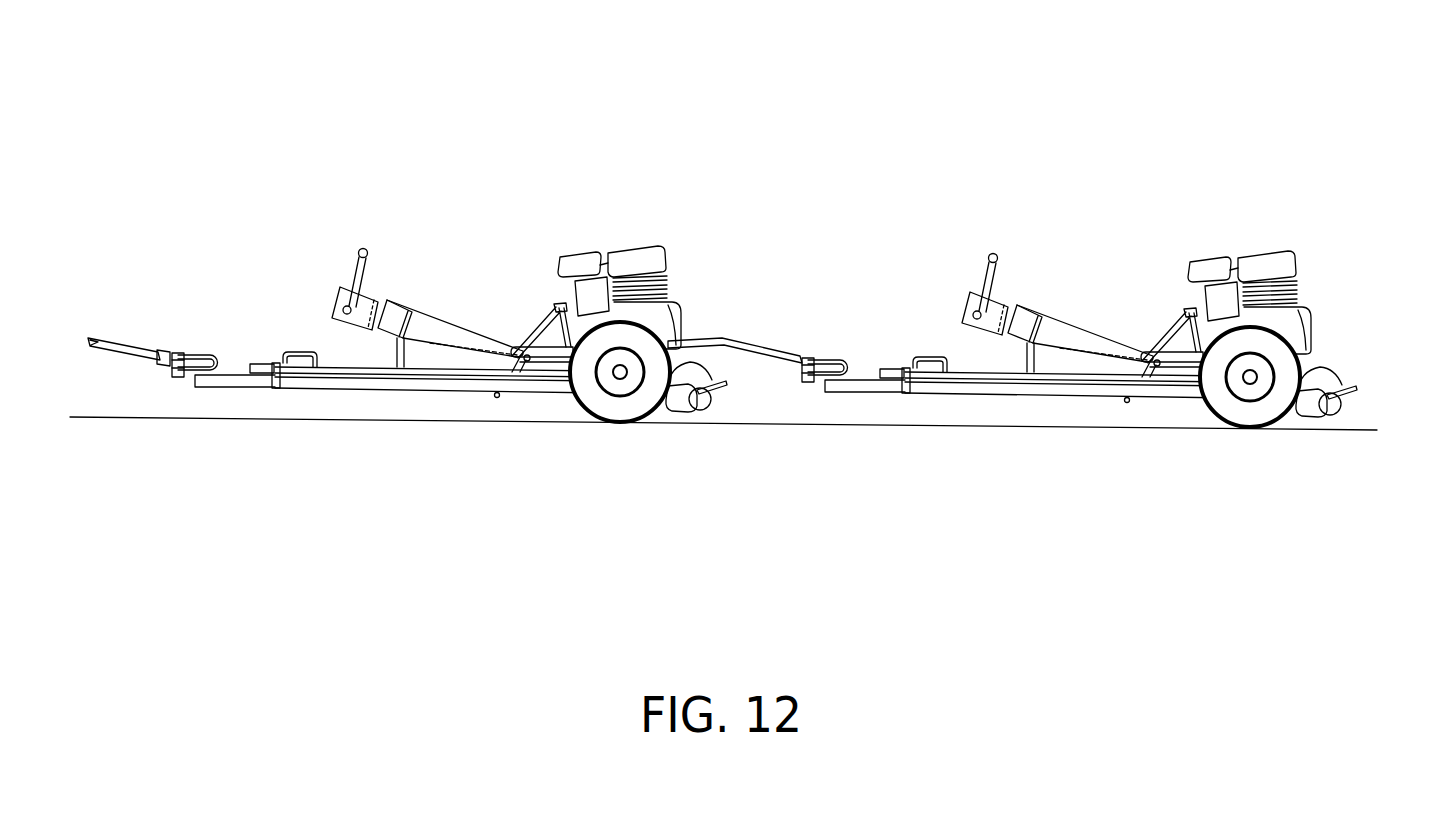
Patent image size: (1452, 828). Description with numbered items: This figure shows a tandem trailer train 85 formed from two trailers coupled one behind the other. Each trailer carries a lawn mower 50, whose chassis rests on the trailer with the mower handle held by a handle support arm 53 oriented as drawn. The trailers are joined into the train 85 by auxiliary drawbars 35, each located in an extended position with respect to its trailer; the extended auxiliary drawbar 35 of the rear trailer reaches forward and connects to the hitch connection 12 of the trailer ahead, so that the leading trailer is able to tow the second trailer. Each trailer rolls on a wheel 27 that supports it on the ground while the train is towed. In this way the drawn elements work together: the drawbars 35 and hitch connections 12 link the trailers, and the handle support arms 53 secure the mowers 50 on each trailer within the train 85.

The hitch connection 12 is at (196, 355).
The wheel 27 is at (609, 407).
The auxiliary drawbar 35 is at (134, 347).
The lawn mower 50 is at (679, 276).
The handle support arm 53 is at (423, 310).
The train 85 is at (651, 156).